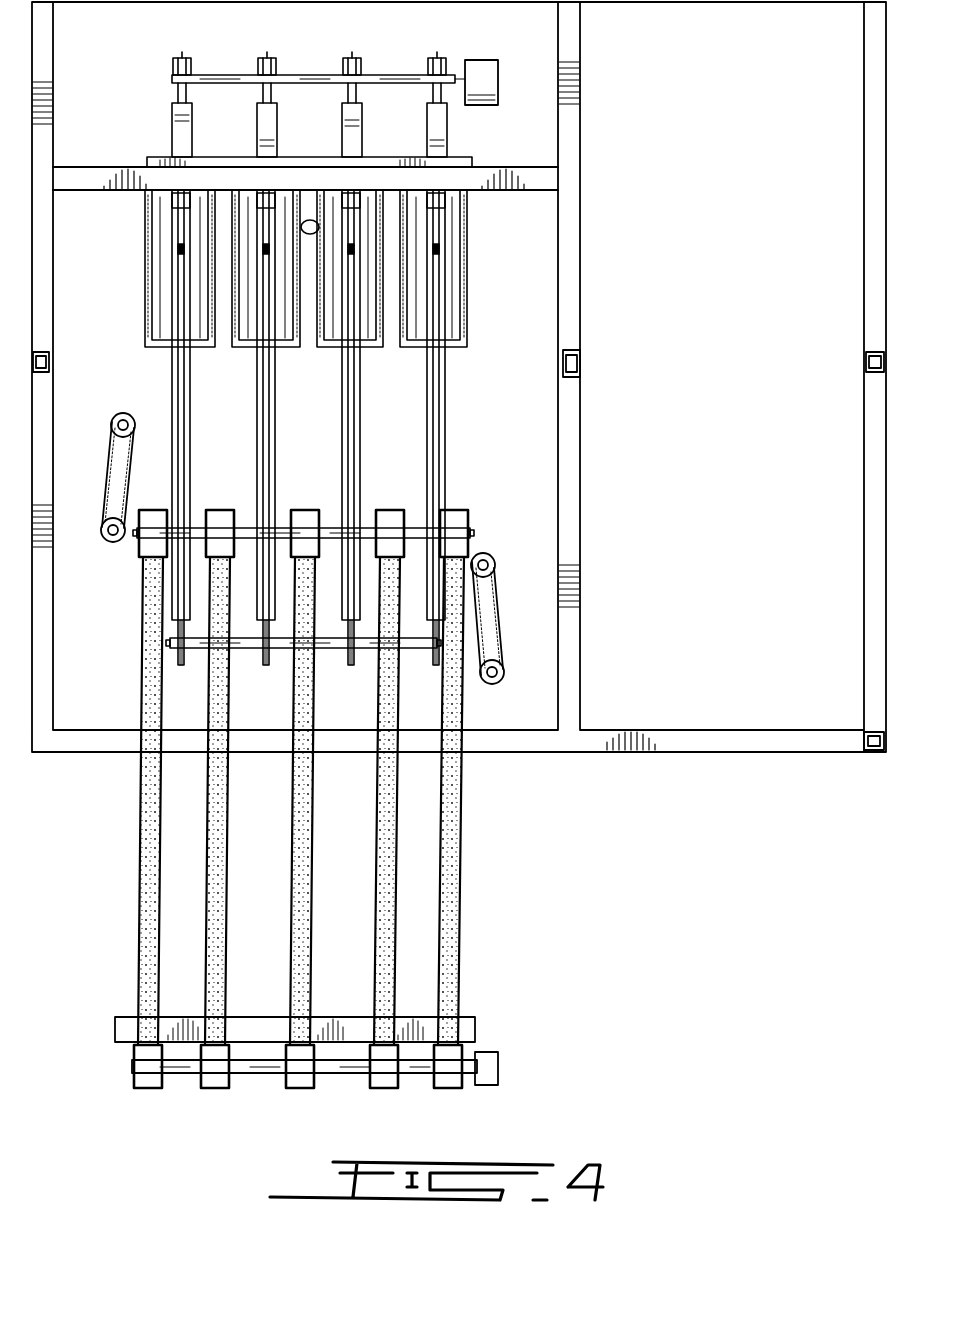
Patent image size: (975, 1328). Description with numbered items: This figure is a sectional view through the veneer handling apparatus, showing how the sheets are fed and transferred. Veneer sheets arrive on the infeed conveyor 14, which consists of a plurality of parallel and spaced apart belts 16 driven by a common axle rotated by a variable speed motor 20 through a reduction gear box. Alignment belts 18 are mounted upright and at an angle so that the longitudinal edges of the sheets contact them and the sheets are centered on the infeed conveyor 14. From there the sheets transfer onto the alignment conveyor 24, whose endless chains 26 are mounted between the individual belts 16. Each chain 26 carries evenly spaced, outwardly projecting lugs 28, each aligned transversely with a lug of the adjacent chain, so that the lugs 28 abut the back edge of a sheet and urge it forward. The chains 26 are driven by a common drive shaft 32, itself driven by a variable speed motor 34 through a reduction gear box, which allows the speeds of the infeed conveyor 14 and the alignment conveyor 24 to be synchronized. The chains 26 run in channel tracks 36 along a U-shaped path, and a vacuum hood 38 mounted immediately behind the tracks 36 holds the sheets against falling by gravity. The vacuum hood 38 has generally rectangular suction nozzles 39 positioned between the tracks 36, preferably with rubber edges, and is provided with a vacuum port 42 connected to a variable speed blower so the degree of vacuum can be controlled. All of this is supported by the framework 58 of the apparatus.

The infeed conveyor 14 is at (117, 782).
The belts 16 is at (385, 884).
The alignment belts 18 is at (110, 456).
The variable speed motor 20 is at (498, 1062).
The alignment conveyor 24 is at (160, 355).
The endless chains 26 is at (447, 412).
The lugs 28 is at (263, 418).
The common drive shaft 32 is at (312, 76).
The variable speed motor 34 is at (498, 64).
The channel tracks 36 is at (440, 373).
The vacuum hood 38 is at (467, 240).
The suction nozzles 39 is at (222, 295).
The vacuum port 42 is at (310, 220).
The framework 58 is at (575, 244).